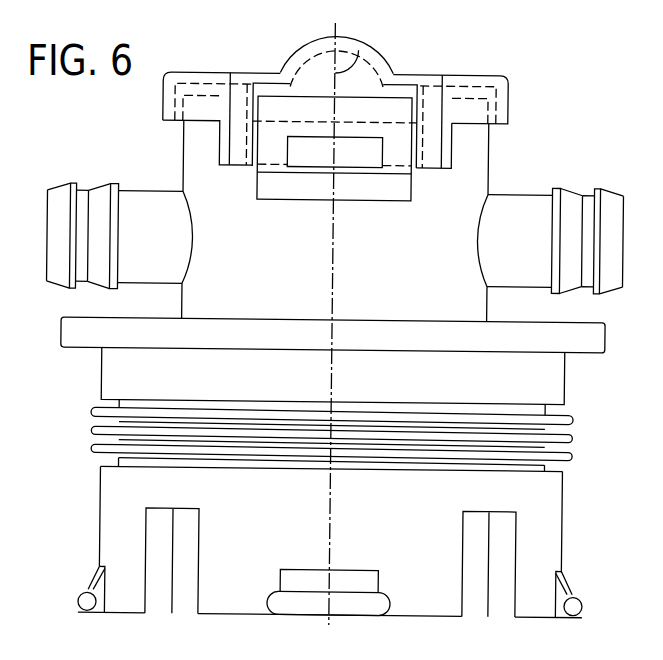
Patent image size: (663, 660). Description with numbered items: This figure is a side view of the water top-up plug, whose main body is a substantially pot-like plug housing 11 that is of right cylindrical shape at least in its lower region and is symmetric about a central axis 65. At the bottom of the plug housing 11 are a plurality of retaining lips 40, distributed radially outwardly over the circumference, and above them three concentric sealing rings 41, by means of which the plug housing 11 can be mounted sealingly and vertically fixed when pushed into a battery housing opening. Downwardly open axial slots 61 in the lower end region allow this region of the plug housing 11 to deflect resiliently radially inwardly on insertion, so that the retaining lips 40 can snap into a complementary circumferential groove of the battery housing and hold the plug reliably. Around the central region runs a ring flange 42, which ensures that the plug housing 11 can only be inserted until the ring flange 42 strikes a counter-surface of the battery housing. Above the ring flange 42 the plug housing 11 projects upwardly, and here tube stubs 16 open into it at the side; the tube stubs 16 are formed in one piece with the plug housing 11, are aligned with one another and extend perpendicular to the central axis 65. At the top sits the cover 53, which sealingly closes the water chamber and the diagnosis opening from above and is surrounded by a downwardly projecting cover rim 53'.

The plug housing 11 is at (322, 388).
The tube stubs 16 is at (142, 205).
The retaining lips 40 is at (96, 604).
The sealing rings 41 is at (571, 454).
The ring flange 42 is at (70, 333).
The cover 53 is at (345, 118).
The cover rim 53' is at (474, 102).
The axial slots 61 is at (186, 607).
The central axis 65 is at (356, 50).